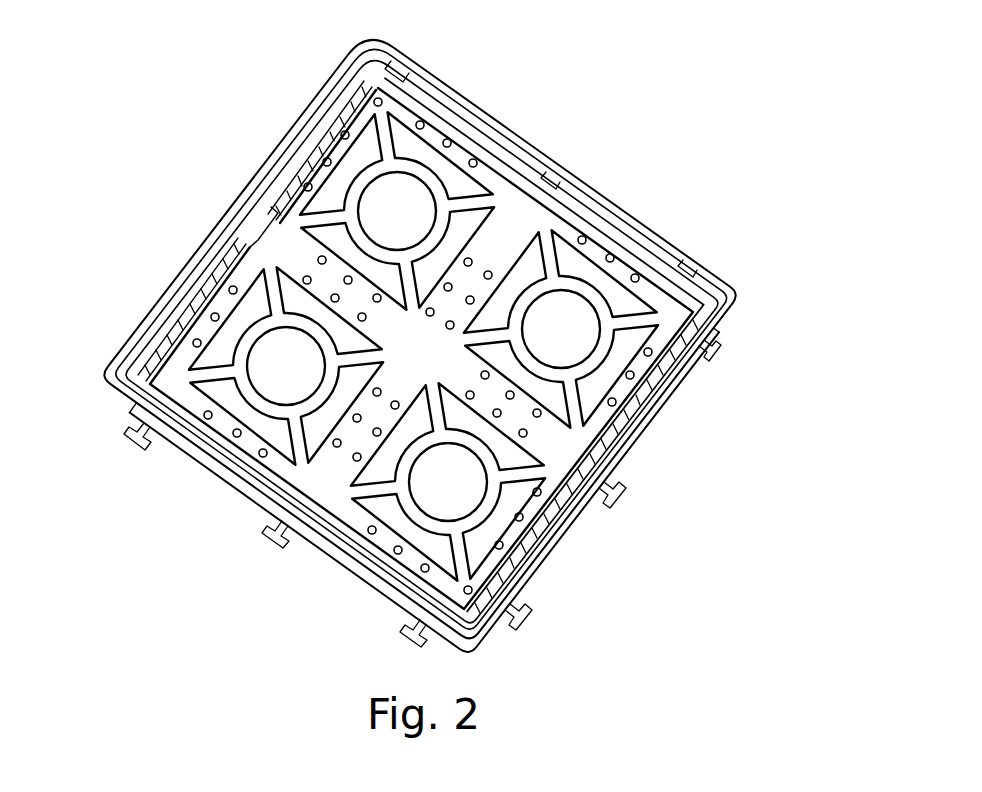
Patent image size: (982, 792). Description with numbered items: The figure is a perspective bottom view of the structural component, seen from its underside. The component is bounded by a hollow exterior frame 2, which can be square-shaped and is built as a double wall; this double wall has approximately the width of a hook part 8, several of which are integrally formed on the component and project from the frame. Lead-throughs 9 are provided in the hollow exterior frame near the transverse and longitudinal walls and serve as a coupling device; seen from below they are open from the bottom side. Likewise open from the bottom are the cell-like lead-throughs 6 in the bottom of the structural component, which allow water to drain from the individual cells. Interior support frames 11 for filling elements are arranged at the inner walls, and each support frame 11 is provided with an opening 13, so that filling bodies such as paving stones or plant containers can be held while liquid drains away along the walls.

The hollow exterior frame 2 is at (478, 133).
The cell-like lead-throughs 6 is at (608, 290).
The hook 8 is at (718, 352).
The lead-throughs 9 is at (414, 68).
The interior support frame 11 is at (523, 230).
The opening 13 is at (613, 400).